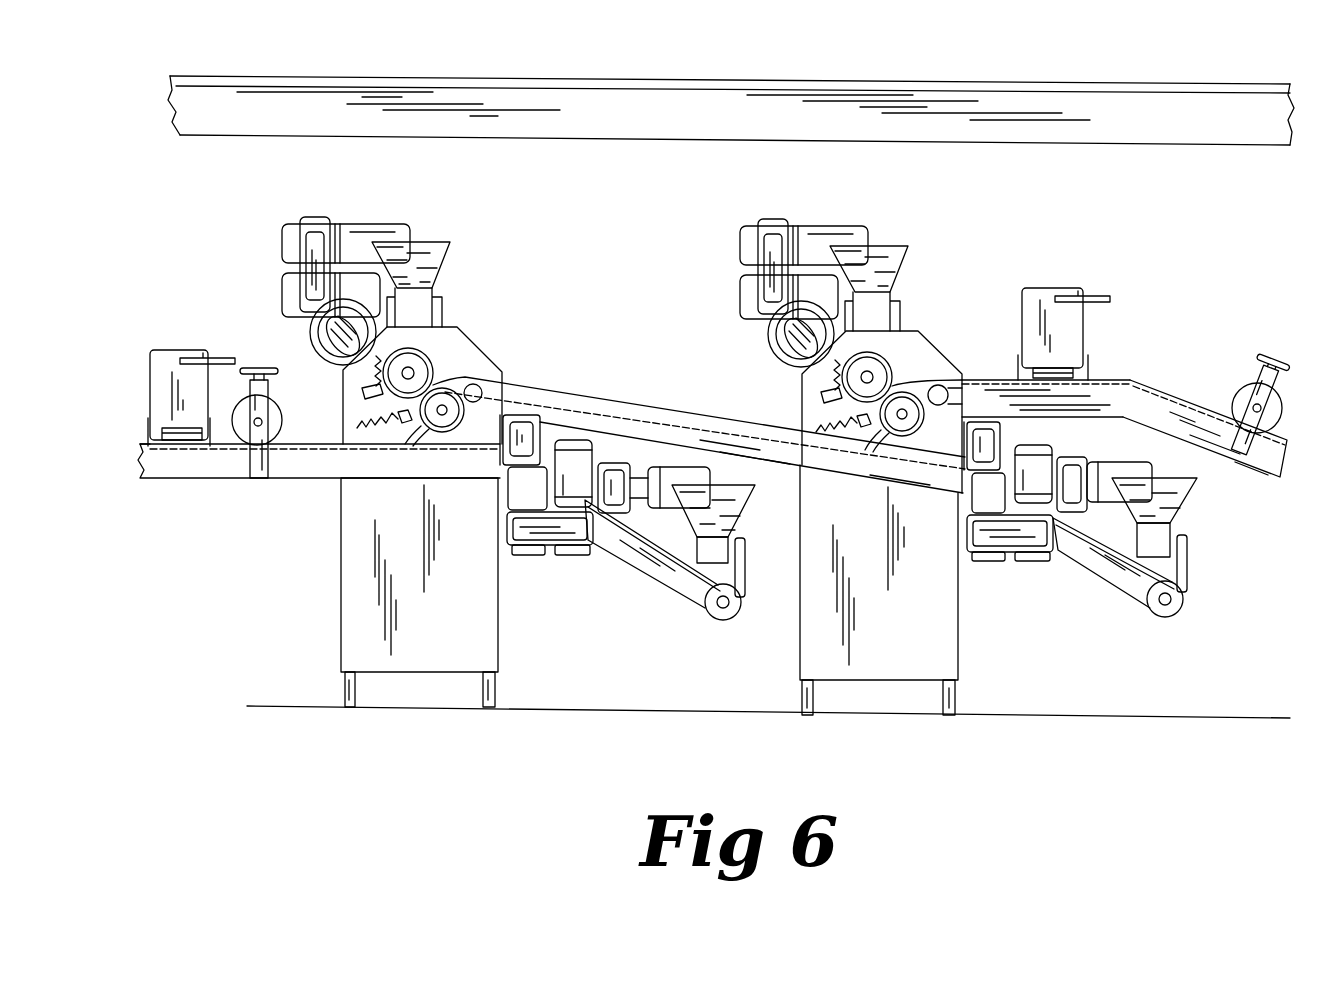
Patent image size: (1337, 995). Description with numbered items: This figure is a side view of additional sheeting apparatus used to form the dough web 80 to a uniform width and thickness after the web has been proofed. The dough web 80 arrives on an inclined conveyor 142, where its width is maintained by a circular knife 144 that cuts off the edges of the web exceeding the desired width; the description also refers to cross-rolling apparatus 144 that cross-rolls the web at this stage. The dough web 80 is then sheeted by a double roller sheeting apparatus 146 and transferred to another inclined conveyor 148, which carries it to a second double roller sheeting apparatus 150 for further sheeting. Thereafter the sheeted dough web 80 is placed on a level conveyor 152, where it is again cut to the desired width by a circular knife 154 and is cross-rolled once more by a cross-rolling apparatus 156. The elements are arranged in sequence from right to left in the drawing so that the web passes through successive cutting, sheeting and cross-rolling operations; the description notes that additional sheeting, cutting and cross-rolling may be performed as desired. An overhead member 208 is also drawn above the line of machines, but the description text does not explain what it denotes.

The overhead support beam 208 is at (810, 85).
The cross-rolling apparatus 156 is at (177, 348).
The circular knife 154 is at (273, 407).
The level conveyor 152 is at (308, 463).
The dough web 80 is at (297, 440).
The double roller sheeting apparatus 150 is at (483, 350).
The inclined conveyor 148 is at (787, 455).
The double roller sheeting apparatus 146 is at (797, 386).
The circular knife 144 is at (1047, 288).
The inclined conveyor 142 is at (1213, 440).